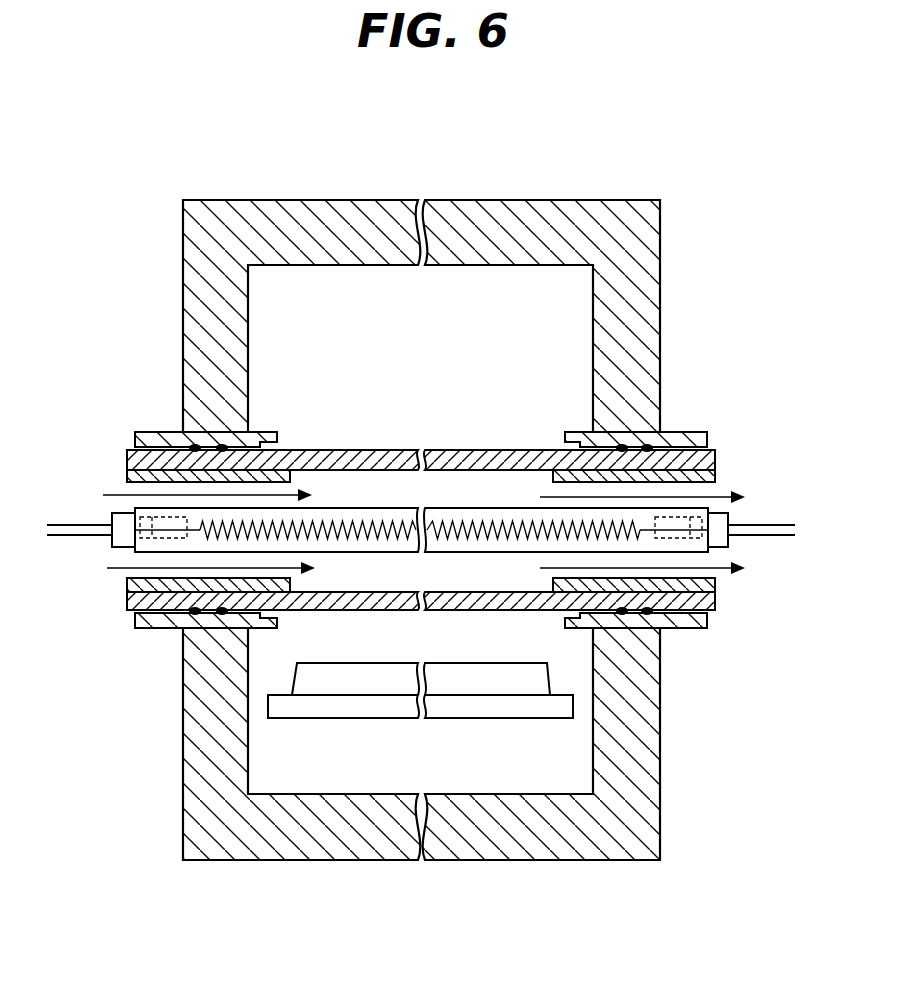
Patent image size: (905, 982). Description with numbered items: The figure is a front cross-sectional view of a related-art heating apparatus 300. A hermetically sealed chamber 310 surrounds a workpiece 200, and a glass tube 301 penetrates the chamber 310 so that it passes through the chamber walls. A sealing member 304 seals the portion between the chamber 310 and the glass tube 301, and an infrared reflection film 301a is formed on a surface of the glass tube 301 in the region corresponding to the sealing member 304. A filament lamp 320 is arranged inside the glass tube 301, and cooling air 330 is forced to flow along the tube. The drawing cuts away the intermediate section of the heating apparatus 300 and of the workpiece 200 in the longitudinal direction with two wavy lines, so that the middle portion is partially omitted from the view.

The heating apparatus 300 is at (185, 143).
The hermetically sealed chamber 310 is at (205, 308).
The sealing member 304 is at (195, 447).
The glass tube 301 is at (167, 460).
The infrared reflection film 301a is at (153, 477).
The filament lamp 320 is at (92, 542).
The cooling air 330 is at (607, 496).
The workpiece 200 is at (352, 705).